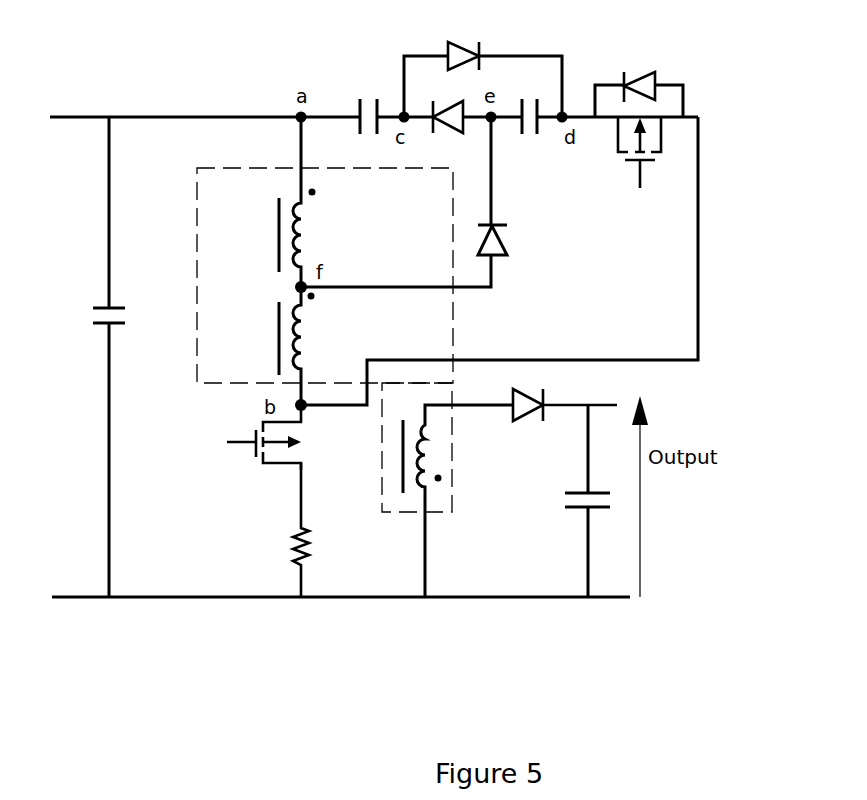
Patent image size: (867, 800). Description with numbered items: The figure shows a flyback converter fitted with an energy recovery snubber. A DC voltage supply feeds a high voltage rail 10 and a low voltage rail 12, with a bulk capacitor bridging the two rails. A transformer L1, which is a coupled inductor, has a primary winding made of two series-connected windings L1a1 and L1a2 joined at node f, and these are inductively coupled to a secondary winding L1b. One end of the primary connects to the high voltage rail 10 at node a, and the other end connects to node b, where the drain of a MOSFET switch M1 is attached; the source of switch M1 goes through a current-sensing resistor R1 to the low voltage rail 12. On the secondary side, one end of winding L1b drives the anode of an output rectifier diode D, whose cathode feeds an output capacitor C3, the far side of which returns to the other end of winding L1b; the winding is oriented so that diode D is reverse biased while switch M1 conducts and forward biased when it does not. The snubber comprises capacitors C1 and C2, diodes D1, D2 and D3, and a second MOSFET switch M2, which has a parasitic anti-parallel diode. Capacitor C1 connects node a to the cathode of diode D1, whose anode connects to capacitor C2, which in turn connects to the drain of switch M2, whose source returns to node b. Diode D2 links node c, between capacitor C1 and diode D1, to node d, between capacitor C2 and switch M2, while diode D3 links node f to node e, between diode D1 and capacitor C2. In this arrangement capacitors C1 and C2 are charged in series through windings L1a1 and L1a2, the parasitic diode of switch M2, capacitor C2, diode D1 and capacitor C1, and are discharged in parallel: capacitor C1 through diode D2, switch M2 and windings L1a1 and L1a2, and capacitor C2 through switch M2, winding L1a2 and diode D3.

The high voltage rail 10 is at (168, 112).
The low voltage rail 12 is at (215, 600).
The DC source DC is at (127, 357).
The capacitor C1 is at (353, 128).
The diode D1 is at (447, 101).
The capacitor C2 is at (525, 128).
The diode D2 is at (483, 68).
The second MOSFET switch M2 is at (510, 235).
The diode D3 is at (428, 202).
The transformer L1 is at (457, 344).
The winding L1a1 is at (267, 202).
The winding L1a2 is at (267, 346).
The switch M1 is at (284, 437).
The resistor R1 is at (321, 530).
The secondary winding L1b is at (458, 487).
The diode D is at (565, 421).
The output capacitor C3 is at (578, 501).